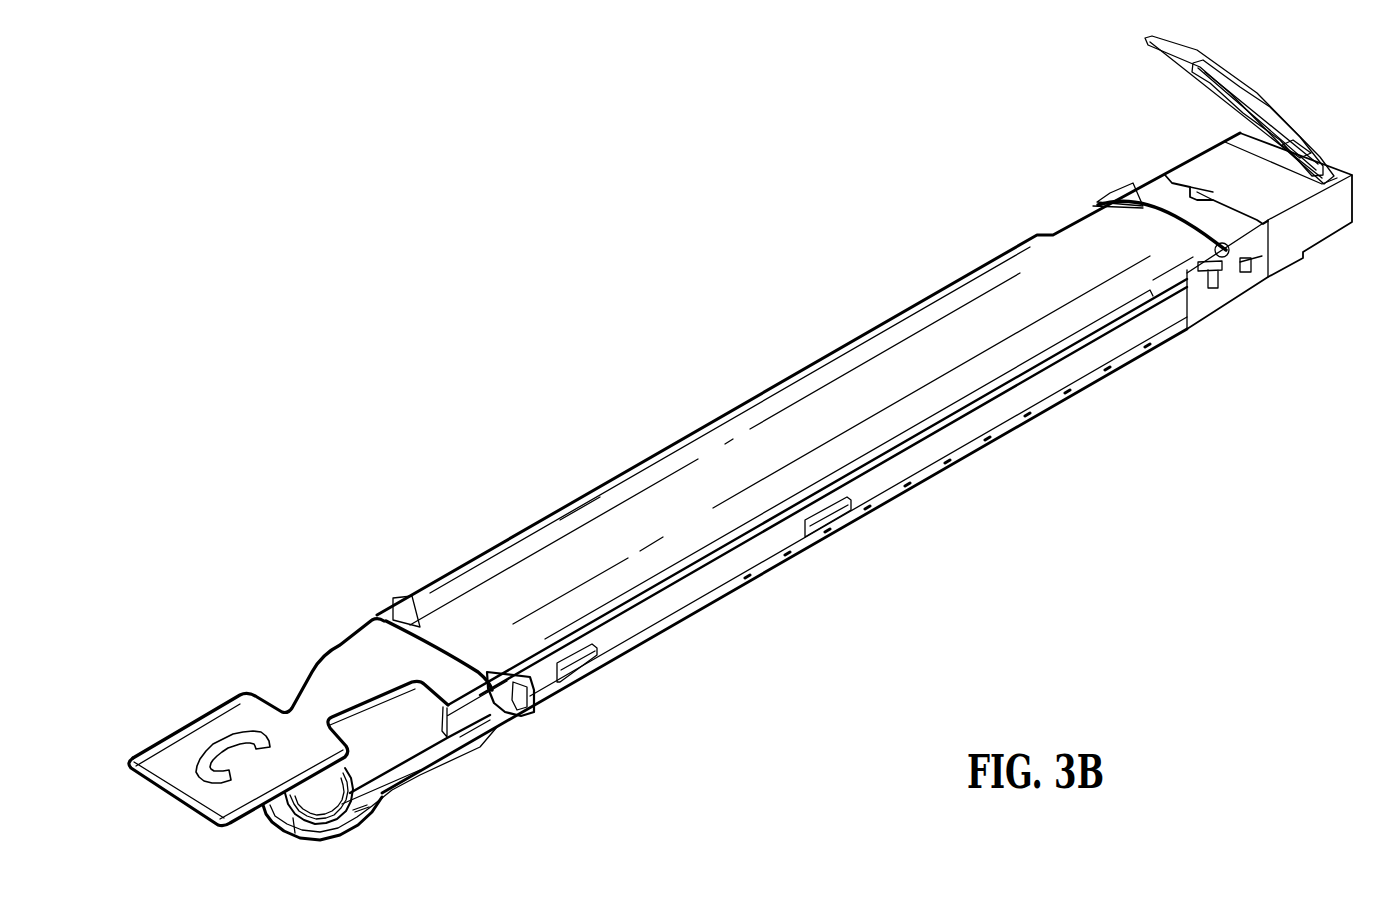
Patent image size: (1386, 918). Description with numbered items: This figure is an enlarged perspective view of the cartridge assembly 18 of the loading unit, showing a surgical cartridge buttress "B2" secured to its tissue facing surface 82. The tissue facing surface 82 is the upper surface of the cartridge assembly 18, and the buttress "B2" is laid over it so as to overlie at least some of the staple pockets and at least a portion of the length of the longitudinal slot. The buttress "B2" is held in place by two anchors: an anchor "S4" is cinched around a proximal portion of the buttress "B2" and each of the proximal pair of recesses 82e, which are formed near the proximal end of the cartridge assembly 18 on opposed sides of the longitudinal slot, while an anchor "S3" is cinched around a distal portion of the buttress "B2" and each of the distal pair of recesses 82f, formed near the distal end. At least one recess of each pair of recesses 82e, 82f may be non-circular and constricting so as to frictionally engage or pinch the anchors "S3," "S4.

The cartridge assembly 18 is at (705, 228).
The tissue facing surface 82 is at (839, 347).
The proximal pair of recesses 82e is at (1126, 200).
The distal pair of recesses 82f is at (508, 706).
The surgical cartridge buttress B2 is at (598, 486).
The anchor S3 is at (423, 626).
The anchor S4 is at (1146, 202).